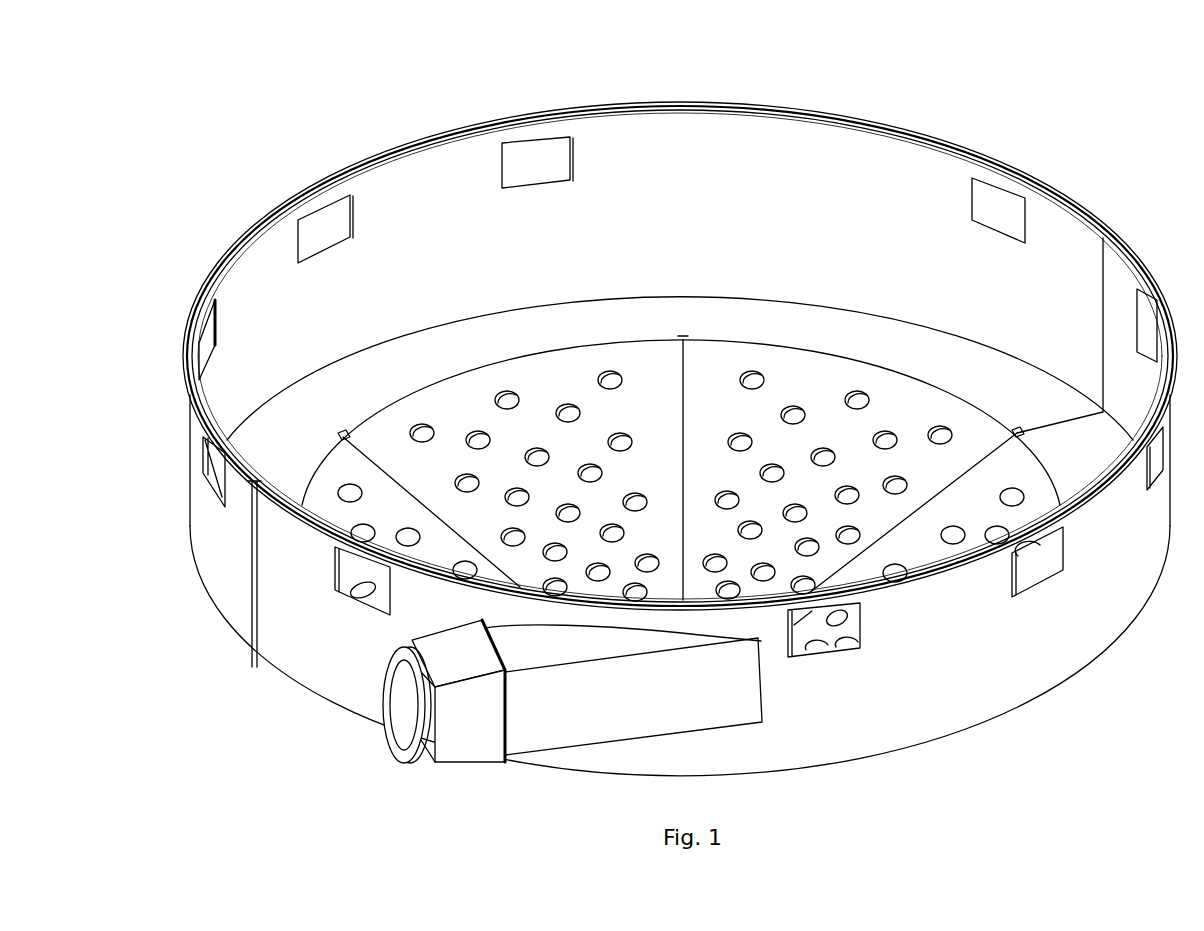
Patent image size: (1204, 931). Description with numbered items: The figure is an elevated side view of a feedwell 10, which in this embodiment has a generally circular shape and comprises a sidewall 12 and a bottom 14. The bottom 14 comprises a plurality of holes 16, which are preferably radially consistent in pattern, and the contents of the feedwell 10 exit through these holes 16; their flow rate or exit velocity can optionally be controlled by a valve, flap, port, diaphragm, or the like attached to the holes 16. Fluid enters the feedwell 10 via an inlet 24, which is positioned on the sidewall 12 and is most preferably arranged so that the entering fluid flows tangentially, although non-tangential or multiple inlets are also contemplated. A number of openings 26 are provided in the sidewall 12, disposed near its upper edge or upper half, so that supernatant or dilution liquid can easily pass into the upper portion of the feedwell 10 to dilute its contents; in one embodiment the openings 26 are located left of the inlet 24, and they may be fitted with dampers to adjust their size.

The feedwell 10 is at (997, 97).
The sidewall 12 is at (831, 204).
The bottom 14 is at (445, 403).
The holes 16 is at (507, 393).
The inlet 24 is at (407, 700).
The openings 26 is at (220, 320).